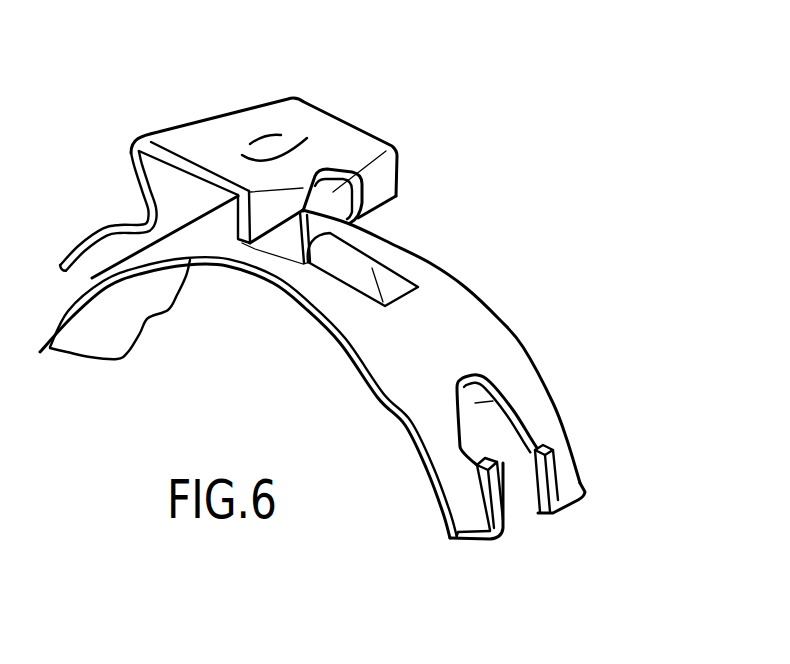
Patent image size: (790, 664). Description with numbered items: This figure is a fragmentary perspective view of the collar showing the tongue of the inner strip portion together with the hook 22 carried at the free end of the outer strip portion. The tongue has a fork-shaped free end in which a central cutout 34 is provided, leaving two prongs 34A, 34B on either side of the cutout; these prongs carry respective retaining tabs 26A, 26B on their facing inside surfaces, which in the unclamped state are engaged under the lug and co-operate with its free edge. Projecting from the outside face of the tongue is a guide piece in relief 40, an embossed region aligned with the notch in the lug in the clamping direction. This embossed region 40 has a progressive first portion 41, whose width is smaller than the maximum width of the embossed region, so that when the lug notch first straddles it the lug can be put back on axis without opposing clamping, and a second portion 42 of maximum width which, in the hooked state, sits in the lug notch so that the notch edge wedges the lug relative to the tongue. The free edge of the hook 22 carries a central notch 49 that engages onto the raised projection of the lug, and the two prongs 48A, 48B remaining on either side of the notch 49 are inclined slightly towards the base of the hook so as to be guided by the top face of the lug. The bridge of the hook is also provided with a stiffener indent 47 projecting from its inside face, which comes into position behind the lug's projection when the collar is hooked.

The hook 22 is at (318, 90).
The stiffener indent 47 is at (278, 140).
The notch 49 is at (347, 185).
The prong 48B is at (380, 195).
The guide piece in relief 40 is at (405, 242).
The prong 48A is at (270, 222).
The second portion 42 is at (292, 255).
The first portion 41 is at (351, 278).
The central cutout 34 is at (503, 393).
The retaining tab 26B is at (547, 460).
The prong 34B is at (572, 486).
The prong 34A is at (455, 508).
The retaining tab 26A is at (497, 483).